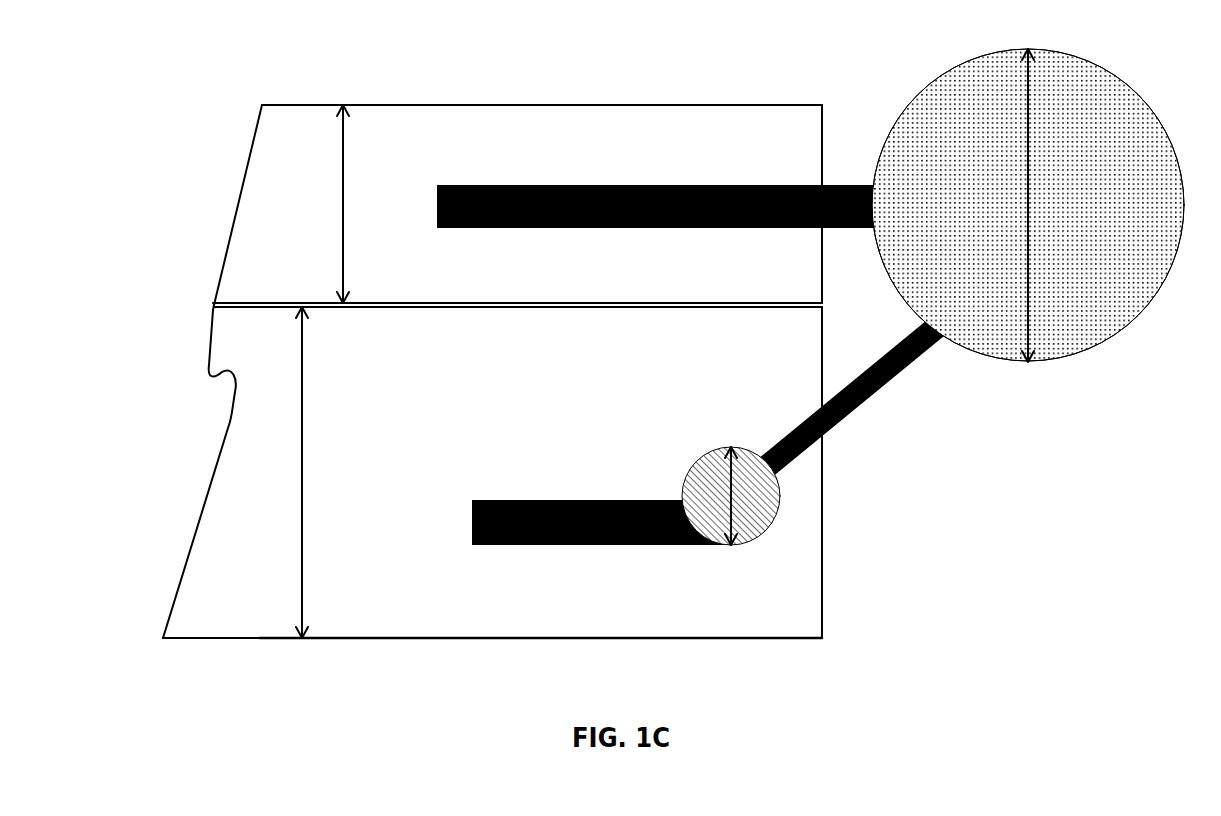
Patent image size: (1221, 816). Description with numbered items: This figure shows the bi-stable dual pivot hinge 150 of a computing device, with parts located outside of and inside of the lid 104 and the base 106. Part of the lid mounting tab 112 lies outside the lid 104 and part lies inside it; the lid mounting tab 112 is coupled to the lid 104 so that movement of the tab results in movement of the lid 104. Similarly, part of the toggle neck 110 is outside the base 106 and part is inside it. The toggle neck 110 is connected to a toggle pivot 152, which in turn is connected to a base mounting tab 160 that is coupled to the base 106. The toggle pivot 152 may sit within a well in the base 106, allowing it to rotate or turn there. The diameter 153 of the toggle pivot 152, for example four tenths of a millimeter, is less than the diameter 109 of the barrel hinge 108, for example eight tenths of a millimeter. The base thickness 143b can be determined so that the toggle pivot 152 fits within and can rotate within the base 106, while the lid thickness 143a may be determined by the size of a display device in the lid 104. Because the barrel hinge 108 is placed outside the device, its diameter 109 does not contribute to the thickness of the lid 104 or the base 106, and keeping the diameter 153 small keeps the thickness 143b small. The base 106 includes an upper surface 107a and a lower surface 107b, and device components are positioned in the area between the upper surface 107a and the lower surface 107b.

The lid 104 is at (548, 115).
The base 106 is at (513, 630).
The upper surface 107a is at (458, 308).
The lower surface 107b is at (392, 638).
The barrel hinge 108 is at (1127, 350).
The diameter 109 is at (1028, 233).
The toggle neck 110 is at (857, 398).
The lid mounting tab 112 is at (630, 185).
The lid thickness 143a is at (345, 184).
The base thickness 143b is at (302, 472).
The bi-stable dual pivot hinge 150 is at (1083, 60).
The toggle pivot 152 is at (767, 508).
The diameter 153 is at (732, 497).
The base mounting tab 160 is at (618, 545).